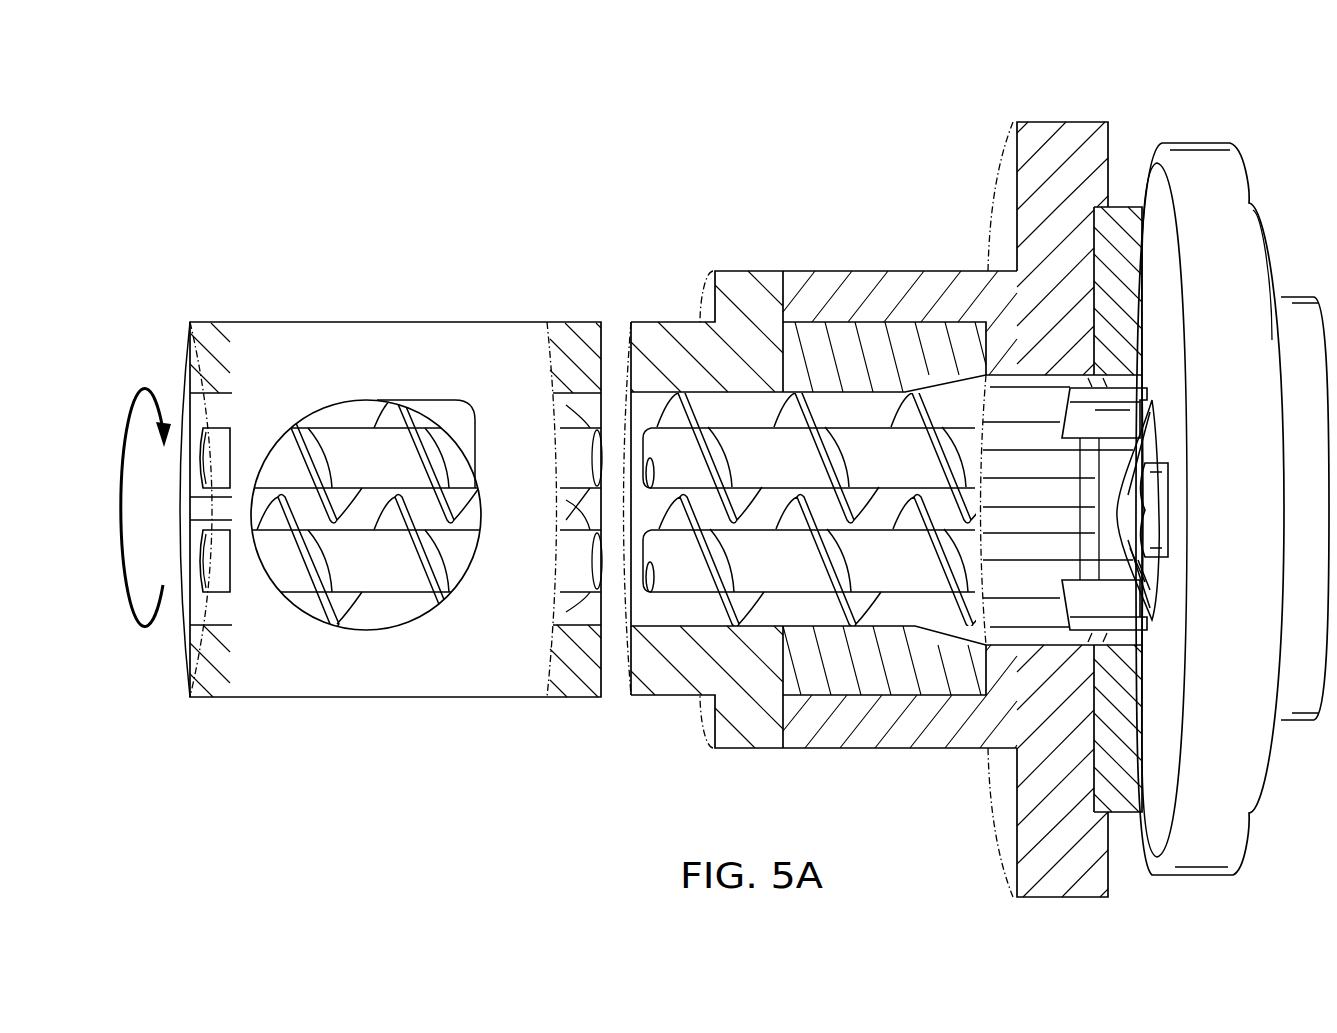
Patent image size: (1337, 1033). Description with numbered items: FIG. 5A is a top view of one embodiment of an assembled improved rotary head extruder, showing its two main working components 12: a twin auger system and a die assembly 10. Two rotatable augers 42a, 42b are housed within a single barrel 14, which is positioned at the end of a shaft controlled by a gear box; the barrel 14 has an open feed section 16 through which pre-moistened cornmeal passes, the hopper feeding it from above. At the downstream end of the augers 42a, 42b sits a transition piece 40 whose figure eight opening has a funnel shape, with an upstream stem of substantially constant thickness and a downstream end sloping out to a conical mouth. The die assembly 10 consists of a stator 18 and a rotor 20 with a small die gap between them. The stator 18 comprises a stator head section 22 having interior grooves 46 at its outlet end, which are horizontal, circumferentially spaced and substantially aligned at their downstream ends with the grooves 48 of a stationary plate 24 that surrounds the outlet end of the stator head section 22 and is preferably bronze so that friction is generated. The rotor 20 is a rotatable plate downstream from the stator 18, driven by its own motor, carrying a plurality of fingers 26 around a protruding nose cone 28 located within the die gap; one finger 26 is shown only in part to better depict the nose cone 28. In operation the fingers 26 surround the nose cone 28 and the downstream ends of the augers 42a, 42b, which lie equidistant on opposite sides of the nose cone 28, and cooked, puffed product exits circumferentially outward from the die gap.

The die assembly 10 is at (1280, 63).
The main working components 12 is at (548, 116).
The barrel 14 is at (418, 322).
The open feed section 16 is at (385, 606).
The stator 18 is at (1142, 108).
The rotor 20 is at (1200, 143).
The stator head section 22 is at (915, 748).
The stationary plate 24 is at (1130, 702).
The fingers 26 is at (1145, 385).
The nose cone 28 is at (1148, 575).
The transition piece 40 is at (900, 330).
The rotatable auger 42a is at (200, 442).
The rotatable auger 42b is at (200, 576).
The interior grooves 46 is at (1067, 507).
The grooves 48 is at (1100, 470).